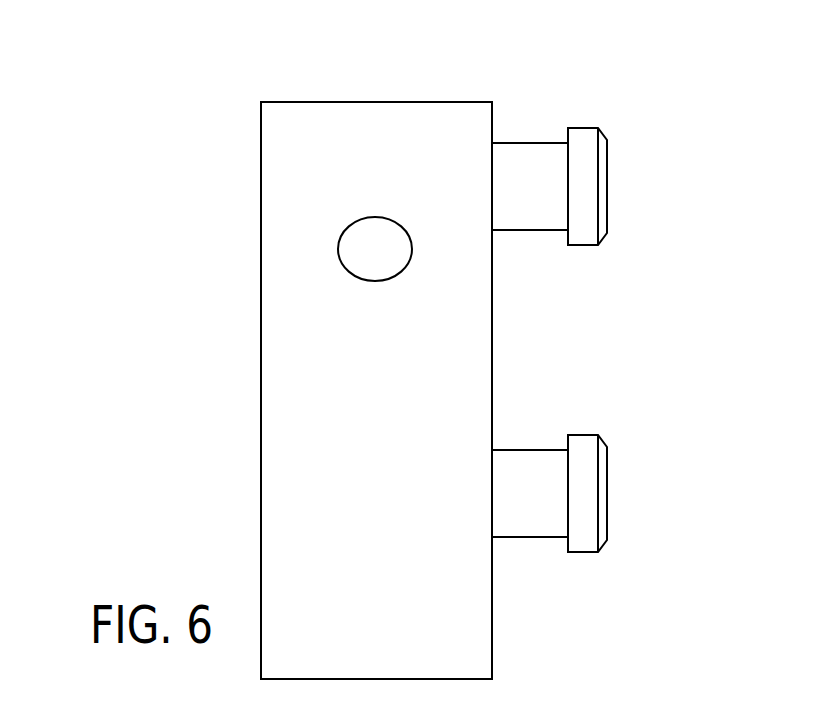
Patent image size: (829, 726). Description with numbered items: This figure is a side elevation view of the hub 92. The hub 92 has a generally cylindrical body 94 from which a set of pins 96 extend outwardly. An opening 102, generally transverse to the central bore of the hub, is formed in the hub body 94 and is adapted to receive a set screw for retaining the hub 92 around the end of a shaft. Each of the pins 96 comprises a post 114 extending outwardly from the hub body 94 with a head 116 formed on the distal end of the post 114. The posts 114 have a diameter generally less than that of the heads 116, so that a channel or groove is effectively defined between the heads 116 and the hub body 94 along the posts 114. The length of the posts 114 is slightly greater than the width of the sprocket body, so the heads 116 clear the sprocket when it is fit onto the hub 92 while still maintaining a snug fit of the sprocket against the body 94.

The hub 92 is at (295, 68).
The hub body 94 is at (372, 130).
The pins 96 is at (538, 125).
The opening 102 is at (398, 263).
The posts 114 is at (525, 218).
The heads 116 is at (582, 138).